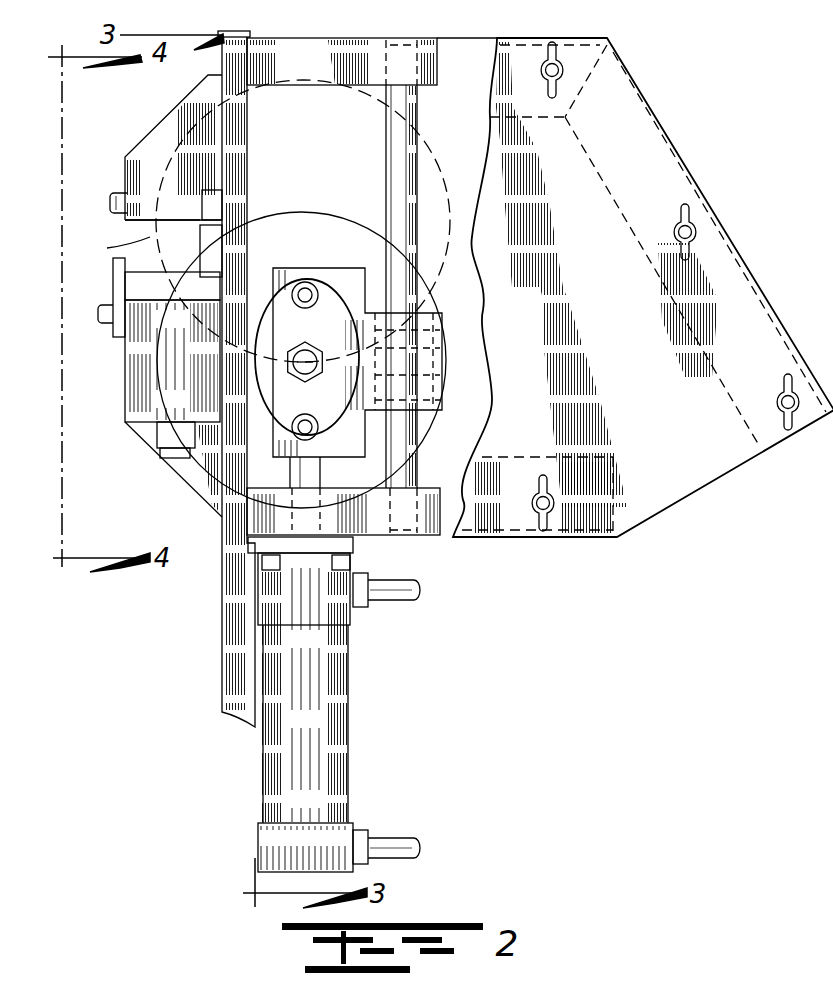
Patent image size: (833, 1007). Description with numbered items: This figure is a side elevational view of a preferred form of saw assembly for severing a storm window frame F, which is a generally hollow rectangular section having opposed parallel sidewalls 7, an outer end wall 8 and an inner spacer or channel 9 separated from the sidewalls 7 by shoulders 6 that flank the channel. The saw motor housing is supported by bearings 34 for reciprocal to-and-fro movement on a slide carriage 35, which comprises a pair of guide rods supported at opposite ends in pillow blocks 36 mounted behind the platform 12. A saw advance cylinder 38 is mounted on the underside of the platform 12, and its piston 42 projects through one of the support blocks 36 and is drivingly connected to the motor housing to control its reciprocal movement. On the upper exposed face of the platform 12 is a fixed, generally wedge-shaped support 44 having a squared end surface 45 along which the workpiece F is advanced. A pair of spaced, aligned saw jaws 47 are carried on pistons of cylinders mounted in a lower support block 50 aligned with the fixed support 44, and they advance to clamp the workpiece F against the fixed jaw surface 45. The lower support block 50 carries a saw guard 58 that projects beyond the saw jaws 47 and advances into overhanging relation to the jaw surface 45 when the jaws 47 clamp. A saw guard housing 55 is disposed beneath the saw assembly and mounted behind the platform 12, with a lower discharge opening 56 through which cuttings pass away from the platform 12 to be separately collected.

The shoulders 6 is at (200, 258).
The sidewalls 7 is at (203, 220).
The outer end wall 8 is at (193, 220).
The inner spacer or channel 9 is at (185, 232).
The frame F is at (119, 251).
The platform 12 is at (223, 643).
The bearings 34 is at (450, 382).
The slide carriage 35 is at (412, 136).
The pillow blocks 36 is at (367, 535).
The saw advance cylinder 38 is at (350, 717).
The piston 42 is at (320, 474).
The fixed support 44 is at (173, 113).
The squared end surface 45 is at (125, 220).
The saw jaws 47 is at (135, 284).
The lower support block 50 is at (130, 380).
The saw guard housing 55 is at (693, 187).
The lower discharge opening 56 is at (707, 480).
The saw guard 58 is at (120, 300).